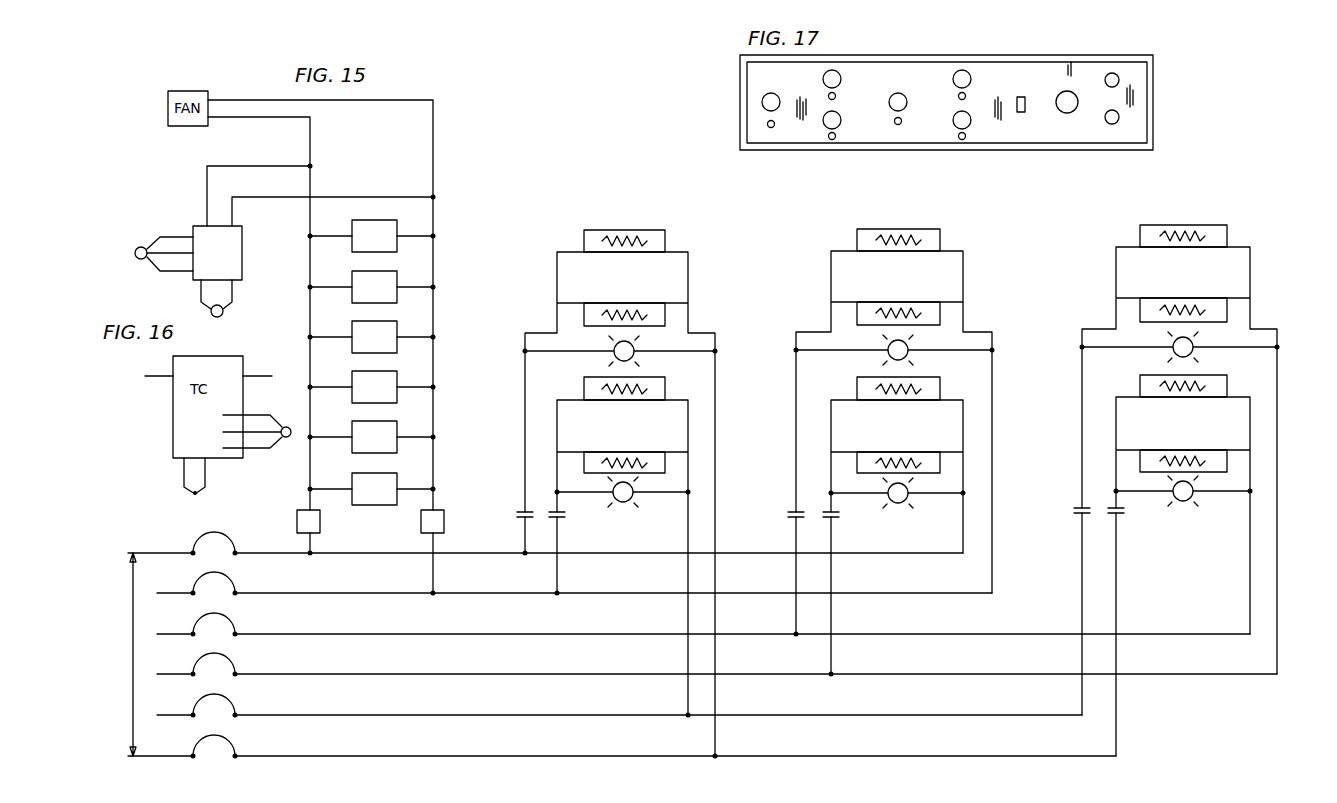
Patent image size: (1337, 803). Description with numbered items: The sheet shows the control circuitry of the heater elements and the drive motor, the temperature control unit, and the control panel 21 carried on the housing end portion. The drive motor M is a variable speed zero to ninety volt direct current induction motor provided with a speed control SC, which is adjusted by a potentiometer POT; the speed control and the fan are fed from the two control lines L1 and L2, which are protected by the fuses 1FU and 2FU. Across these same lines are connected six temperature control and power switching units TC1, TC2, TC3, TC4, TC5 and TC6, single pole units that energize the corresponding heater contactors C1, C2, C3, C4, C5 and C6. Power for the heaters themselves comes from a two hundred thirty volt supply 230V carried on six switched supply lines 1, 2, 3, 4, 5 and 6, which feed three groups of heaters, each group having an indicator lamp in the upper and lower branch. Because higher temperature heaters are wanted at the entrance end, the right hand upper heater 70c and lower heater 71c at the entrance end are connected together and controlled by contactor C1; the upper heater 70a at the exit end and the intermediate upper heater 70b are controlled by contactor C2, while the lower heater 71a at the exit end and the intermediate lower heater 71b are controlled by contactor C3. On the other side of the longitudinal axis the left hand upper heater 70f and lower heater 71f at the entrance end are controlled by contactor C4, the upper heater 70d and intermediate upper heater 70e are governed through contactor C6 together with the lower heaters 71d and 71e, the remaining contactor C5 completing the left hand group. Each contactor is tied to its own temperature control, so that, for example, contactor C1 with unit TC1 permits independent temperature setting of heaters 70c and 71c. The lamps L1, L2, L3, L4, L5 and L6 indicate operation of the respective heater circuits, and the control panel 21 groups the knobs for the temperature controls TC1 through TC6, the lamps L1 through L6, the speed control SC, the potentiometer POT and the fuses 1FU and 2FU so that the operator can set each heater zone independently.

In FIG. 15, the speed control SC is at (242, 258).
In FIG. 17, the speed control SC is at (1025, 110).
In FIG. 15, the potentiometer POT is at (160, 266).
In FIG. 16, the potentiometer POT is at (263, 439).
In FIG. 17, the potentiometer POT is at (1067, 113).
In FIG. 15, the motor M is at (216, 309).
In FIG. 15, the line L1 / indicator lamp L1 is at (310, 272).
In FIG. 16, the line L1 / indicator lamp L1 is at (158, 366).
In FIG. 17, the line L1 / indicator lamp L1 is at (900, 124).
In FIG. 15, the line L2 / indicator lamp L2 is at (433, 248).
In FIG. 16, the line L2 / indicator lamp L2 is at (258, 366).
In FIG. 17, the line L2 / indicator lamp L2 is at (966, 96).
In FIG. 15, the indicator lamp L3 is at (633, 497).
In FIG. 17, the indicator lamp L3 is at (963, 140).
In FIG. 15, the indicator lamp L4 is at (1193, 342).
In FIG. 17, the indicator lamp L4 is at (771, 128).
In FIG. 15, the indicator lamp L5 is at (908, 354).
In FIG. 17, the indicator lamp L5 is at (836, 96).
In FIG. 15, the indicator lamp L6 is at (634, 346).
In FIG. 17, the indicator lamp L6 is at (832, 140).
In FIG. 15, the temperature control and power switching unit TC1 is at (371, 236).
In FIG. 17, the temperature control and power switching unit TC1 is at (906, 97).
In FIG. 15, the temperature control and power switching unit TC2 is at (371, 287).
In FIG. 17, the temperature control and power switching unit TC2 is at (971, 77).
In FIG. 15, the temperature control and power switching unit TC3 is at (371, 337).
In FIG. 15, the temperature control and power switching unit TC4 is at (371, 387).
In FIG. 17, the temperature control and power switching unit TC4 is at (800, 80).
In FIG. 15, the temperature control and power switching unit TC5 is at (371, 437).
In FIG. 17, the temperature control and power switching unit TC5 is at (841, 77).
In FIG. 15, the temperature control and power switching unit TC6 is at (371, 489).
In FIG. 17, the temperature control and power switching unit TC6 is at (841, 124).
In FIG. 15, the fuse 1FU is at (326, 531).
In FIG. 17, the fuse 1FU is at (1119, 80).
In FIG. 15, the fuse 2FU is at (450, 551).
In FIG. 17, the fuse 2FU is at (1119, 117).
In FIG. 15, the supply line 1 is at (545, 542).
In FIG. 15, the supply line 2 is at (574, 582).
In FIG. 15, the supply line 3 is at (703, 623).
In FIG. 15, the supply line 4 is at (717, 663).
In FIG. 15, the supply line 5 is at (619, 704).
In FIG. 15, the supply line 6 is at (622, 745).
In FIG. 15, the power supply 230V is at (123, 654).
In FIG. 15, the lower heater 71d is at (665, 232).
In FIG. 15, the intermediate lower heater 71e is at (665, 320).
In FIG. 15, the lower heater 71a is at (665, 388).
In FIG. 15, the intermediate lower heater 71b is at (665, 467).
In FIG. 15, the lower heater 71f is at (1227, 228).
In FIG. 15, the lower heater 71c is at (1227, 385).
In FIG. 15, the intermediate upper heater 70e is at (940, 232).
In FIG. 15, the upper heater 70d is at (940, 318).
In FIG. 15, the upper heater 70a is at (940, 388).
In FIG. 15, the intermediate upper heater 70b is at (940, 467).
In FIG. 15, the upper heater 70f is at (1227, 317).
In FIG. 15, the upper heater 70c is at (1227, 466).
In FIG. 15, the contactor C1 is at (1119, 515).
In FIG. 15, the contactor C2 is at (834, 519).
In FIG. 15, the contactor C3 is at (560, 519).
In FIG. 15, the contactor C4 is at (1078, 503).
In FIG. 15, the contactor C5 is at (794, 506).
In FIG. 15, the contactor C6 is at (515, 506).
In FIG. 17, the control panel 21 is at (878, 133).